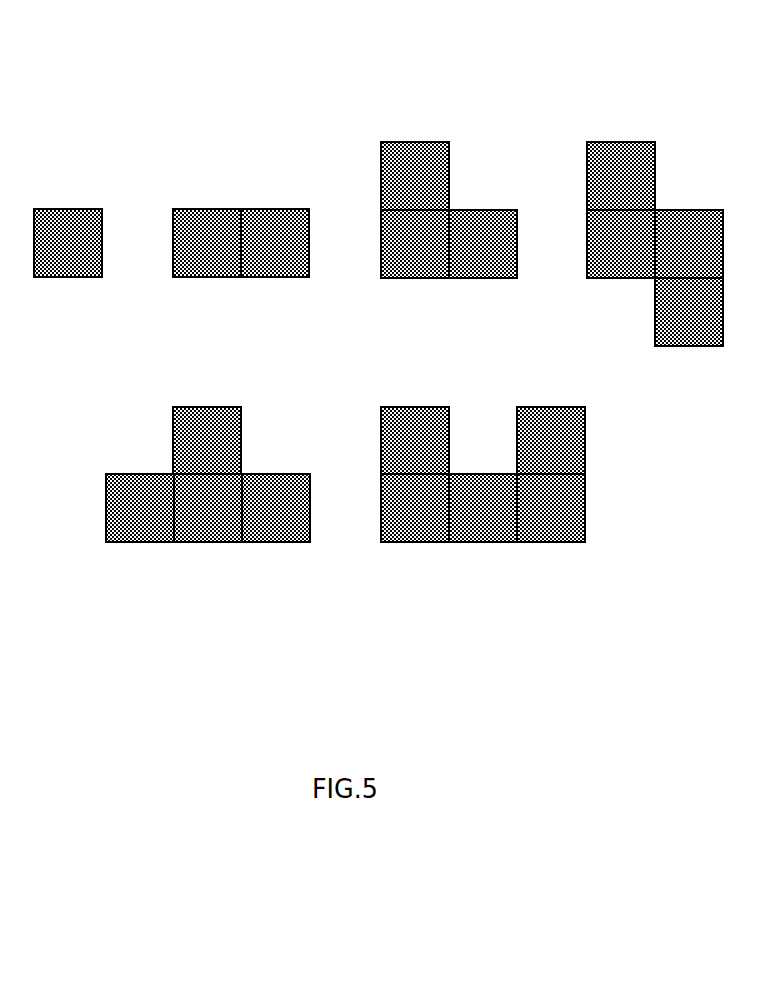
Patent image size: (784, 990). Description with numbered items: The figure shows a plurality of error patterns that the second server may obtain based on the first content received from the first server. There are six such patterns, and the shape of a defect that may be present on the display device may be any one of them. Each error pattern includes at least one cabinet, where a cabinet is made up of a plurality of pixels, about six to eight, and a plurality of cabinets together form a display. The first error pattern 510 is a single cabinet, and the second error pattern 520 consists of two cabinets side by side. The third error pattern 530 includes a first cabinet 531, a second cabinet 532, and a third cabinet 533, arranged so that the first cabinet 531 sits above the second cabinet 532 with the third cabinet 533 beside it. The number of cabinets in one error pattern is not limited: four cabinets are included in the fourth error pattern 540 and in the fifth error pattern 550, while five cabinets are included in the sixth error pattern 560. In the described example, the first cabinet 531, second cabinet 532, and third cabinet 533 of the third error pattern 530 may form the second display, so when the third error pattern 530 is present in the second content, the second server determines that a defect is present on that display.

The first error pattern 510 is at (71, 207).
The second error pattern 520 is at (207, 207).
The third error pattern 530 is at (450, 169).
The first cabinet 531 is at (450, 172).
The second cabinet 532 is at (410, 279).
The third cabinet 533 is at (480, 279).
The fourth error pattern 540 is at (621, 140).
The fifth error pattern 550 is at (205, 543).
The sixth error pattern 560 is at (480, 543).